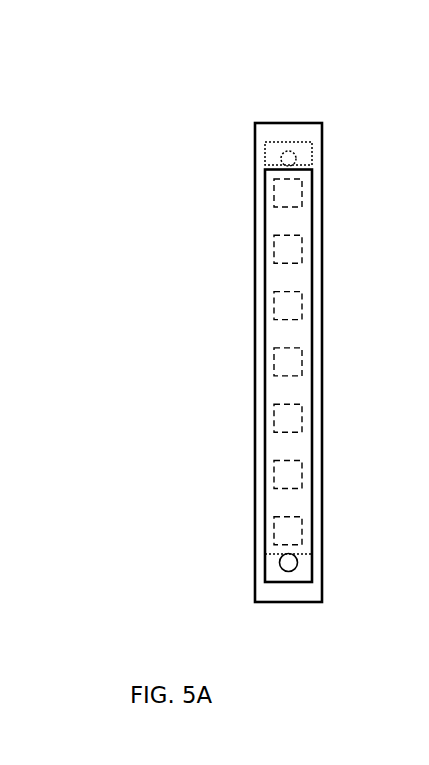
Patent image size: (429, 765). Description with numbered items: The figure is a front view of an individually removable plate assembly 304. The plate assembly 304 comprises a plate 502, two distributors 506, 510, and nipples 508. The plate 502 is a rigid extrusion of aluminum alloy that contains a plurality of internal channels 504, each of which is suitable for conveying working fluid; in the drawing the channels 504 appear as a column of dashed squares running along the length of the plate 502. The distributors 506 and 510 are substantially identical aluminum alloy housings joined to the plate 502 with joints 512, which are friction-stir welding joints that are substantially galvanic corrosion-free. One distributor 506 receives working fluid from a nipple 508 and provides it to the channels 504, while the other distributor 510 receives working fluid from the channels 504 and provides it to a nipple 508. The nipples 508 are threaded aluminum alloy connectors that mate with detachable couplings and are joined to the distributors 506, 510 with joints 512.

The plate assembly 304 is at (170, 70).
The plate 502 is at (255, 325).
The internal channels 504 is at (335, 179).
The distributor 506 is at (265, 255).
The nipple 508 is at (288, 562).
The distributor 510 is at (265, 148).
The joint 512 is at (290, 159).